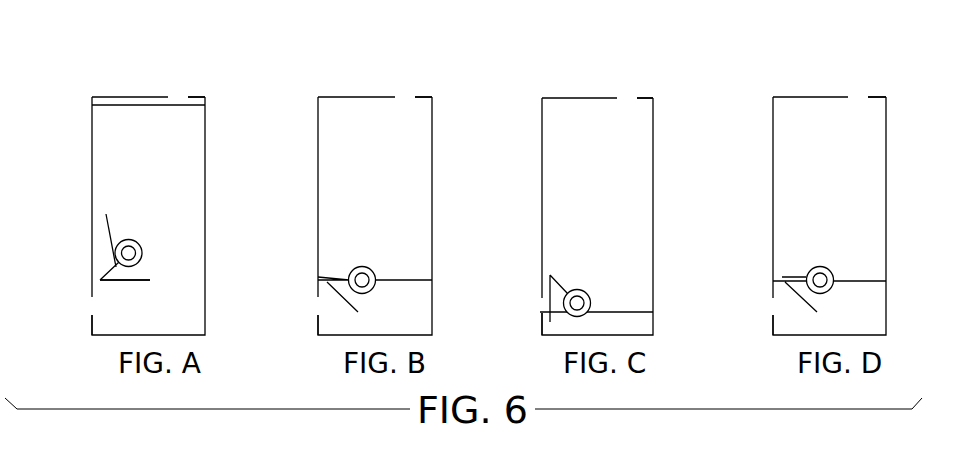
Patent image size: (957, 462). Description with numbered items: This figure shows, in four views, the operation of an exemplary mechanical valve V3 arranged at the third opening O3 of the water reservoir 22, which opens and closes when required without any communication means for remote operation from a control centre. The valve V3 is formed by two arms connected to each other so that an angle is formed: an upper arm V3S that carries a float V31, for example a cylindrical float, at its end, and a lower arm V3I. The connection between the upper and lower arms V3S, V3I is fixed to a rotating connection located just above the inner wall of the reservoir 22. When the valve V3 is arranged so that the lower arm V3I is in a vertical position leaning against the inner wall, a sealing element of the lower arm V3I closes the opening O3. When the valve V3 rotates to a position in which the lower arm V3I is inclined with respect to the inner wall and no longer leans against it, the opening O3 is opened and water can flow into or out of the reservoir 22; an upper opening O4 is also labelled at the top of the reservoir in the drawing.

The water reservoir 22 is at (87, 128).
The upper opening O4 is at (525, 83).
The third opening O3 is at (415, 315).
The valve V3 is at (101, 258).
The float V31 is at (134, 247).
The upper arm V3S is at (113, 235).
The lower arm V3I is at (128, 282).